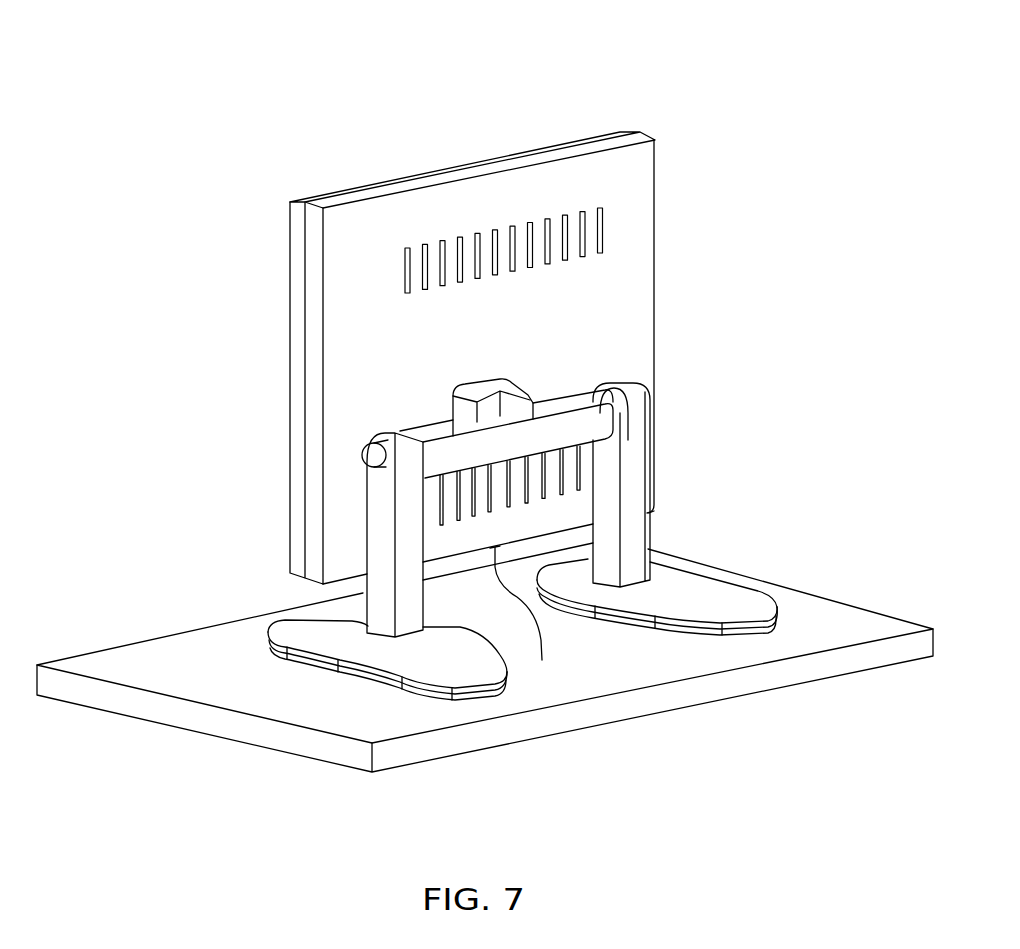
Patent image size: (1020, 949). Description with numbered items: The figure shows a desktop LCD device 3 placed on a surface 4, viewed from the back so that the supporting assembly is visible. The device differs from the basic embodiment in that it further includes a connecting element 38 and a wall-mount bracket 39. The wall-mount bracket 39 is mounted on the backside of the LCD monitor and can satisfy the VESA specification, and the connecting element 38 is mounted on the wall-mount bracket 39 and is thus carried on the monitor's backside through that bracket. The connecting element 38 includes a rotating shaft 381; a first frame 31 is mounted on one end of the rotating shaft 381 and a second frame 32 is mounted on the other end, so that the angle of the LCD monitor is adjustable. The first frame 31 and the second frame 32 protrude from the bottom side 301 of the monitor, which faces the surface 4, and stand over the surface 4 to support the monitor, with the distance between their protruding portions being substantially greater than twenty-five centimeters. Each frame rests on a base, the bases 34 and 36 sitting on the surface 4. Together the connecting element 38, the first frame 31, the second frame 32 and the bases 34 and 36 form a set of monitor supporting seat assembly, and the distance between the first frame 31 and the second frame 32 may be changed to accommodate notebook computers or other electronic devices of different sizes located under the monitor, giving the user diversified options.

The desktop LCD device 3 is at (478, 158).
The surface 4 is at (172, 670).
The first frame 31 is at (378, 537).
The second frame 32 is at (632, 538).
The base 34 is at (702, 612).
The base 36 is at (320, 642).
The connecting element 38 is at (442, 432).
The wall-mount bracket 39 is at (480, 387).
The bottom side 301 is at (527, 619).
The rotating shaft 381 is at (370, 453).